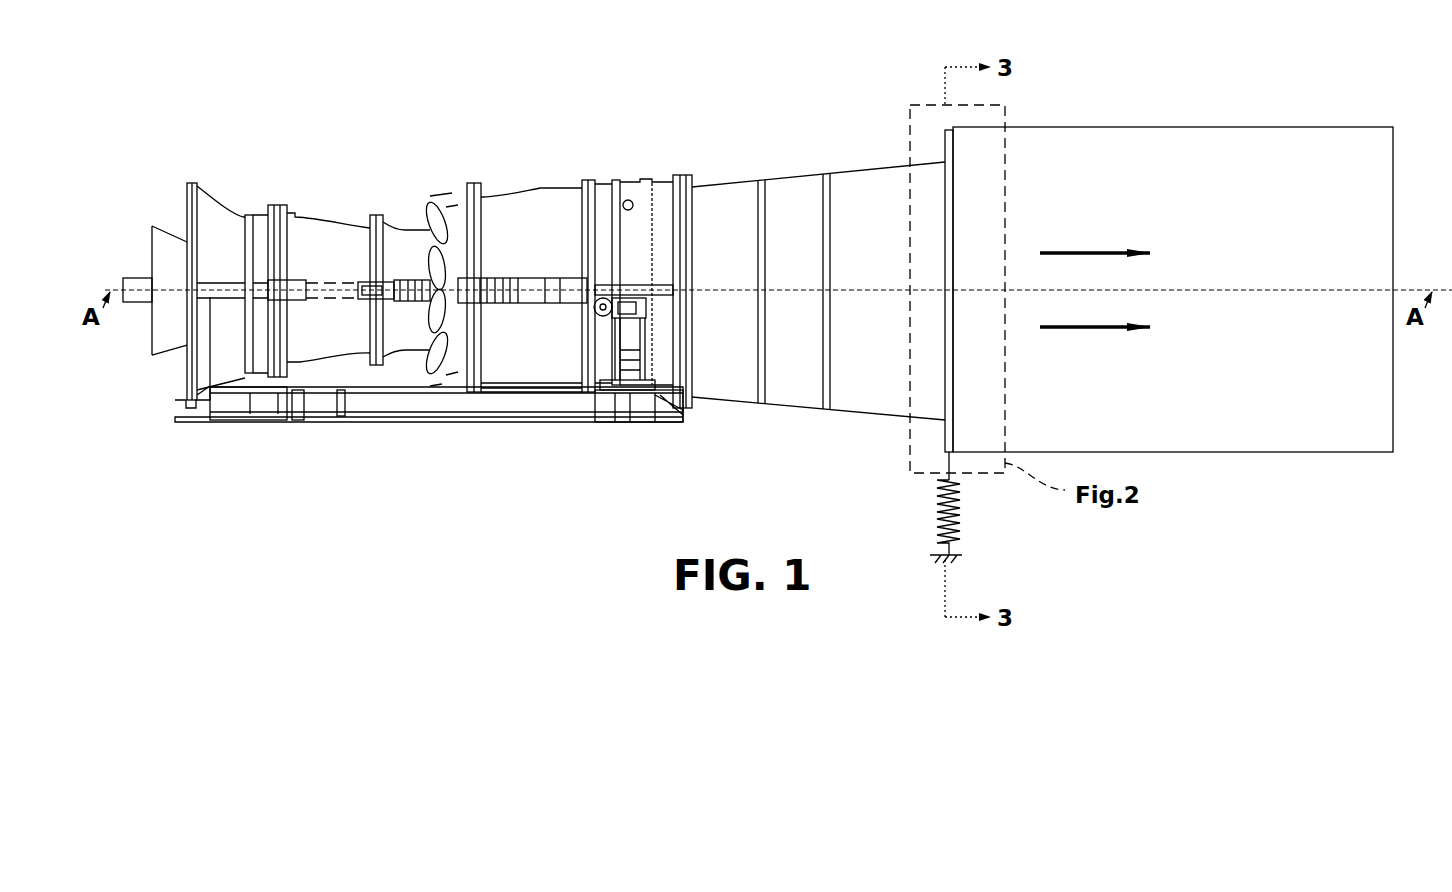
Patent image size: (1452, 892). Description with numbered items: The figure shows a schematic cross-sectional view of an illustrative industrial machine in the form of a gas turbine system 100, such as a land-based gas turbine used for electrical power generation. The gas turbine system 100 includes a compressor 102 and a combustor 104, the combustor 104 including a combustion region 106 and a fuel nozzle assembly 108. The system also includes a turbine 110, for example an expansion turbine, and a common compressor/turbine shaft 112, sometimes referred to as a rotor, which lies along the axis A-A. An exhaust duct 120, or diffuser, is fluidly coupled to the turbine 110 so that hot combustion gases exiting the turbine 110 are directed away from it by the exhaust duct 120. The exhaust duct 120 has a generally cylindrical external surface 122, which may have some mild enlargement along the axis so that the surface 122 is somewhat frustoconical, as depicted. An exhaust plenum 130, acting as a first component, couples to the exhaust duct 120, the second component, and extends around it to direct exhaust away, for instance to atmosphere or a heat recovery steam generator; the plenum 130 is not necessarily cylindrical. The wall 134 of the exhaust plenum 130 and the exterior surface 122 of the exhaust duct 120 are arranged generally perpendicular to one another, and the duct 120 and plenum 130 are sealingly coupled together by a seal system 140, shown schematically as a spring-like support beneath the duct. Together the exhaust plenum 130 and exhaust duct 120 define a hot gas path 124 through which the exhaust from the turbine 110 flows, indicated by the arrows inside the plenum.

The gas turbine system 100 is at (190, 148).
The compressor 102 is at (302, 200).
The combustor 104 is at (455, 178).
The combustion region 106 is at (536, 360).
The fuel nozzle assembly 108 is at (497, 197).
The turbine 110 is at (638, 170).
The common compressor/turbine shaft 112 is at (137, 282).
The exhaust duct 120 is at (865, 155).
The external surface 122 is at (930, 162).
The hot gas path 124 is at (1090, 250).
The exhaust plenum 130 is at (1025, 125).
The wall 134 is at (955, 433).
The seal system 140 is at (940, 433).